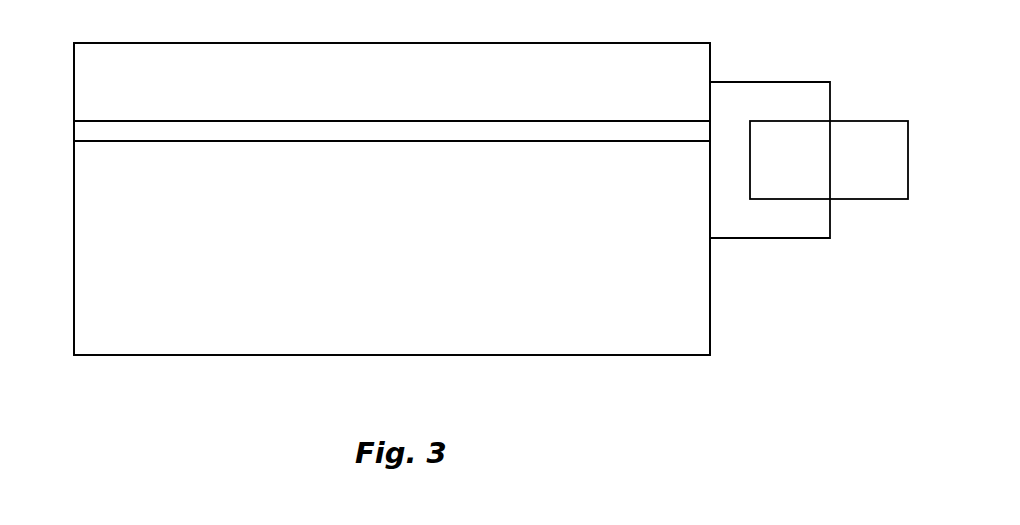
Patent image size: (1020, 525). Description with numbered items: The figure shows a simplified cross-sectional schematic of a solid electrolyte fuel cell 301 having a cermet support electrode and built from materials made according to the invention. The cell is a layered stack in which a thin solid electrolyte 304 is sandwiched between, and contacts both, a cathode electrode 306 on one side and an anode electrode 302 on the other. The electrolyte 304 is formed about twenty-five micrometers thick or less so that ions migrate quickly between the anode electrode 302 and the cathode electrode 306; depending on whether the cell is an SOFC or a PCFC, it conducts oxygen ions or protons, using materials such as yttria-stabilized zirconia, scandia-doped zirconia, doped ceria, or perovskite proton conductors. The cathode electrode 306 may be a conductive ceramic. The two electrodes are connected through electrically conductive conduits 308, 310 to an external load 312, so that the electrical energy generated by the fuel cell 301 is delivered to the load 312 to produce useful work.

The solid electrolyte fuel cell 301 is at (137, 38).
The anode electrode 302 is at (74, 246).
The solid electrolyte 304 is at (74, 130).
The cathode electrode 306 is at (74, 82).
The electrically conductive conduit 308 is at (760, 239).
The electrically conductive conduit 310 is at (760, 81).
The load 312 is at (868, 120).